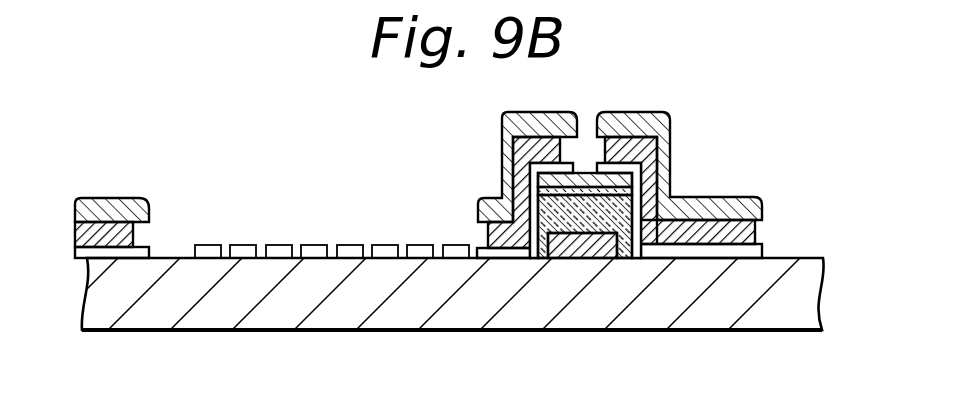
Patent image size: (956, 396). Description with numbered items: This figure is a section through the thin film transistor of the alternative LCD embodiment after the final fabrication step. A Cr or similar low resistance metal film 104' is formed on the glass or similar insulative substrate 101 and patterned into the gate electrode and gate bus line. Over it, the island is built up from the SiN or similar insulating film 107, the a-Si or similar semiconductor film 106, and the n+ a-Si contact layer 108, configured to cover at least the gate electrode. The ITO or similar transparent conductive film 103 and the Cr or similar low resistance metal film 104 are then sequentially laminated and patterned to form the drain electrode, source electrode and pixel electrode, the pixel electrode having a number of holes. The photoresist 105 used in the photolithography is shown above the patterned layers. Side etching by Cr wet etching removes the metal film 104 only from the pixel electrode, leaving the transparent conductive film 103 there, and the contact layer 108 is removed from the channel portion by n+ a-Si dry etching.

The insulative substrate 101 is at (698, 308).
The transparent conductive film 103 is at (762, 249).
The low resistance metal film 104 is at (719, 166).
The low resistance metal film 104' is at (582, 306).
The photoresist 105 is at (503, 123).
The semiconductor film 106 is at (522, 172).
The insulating film 107 is at (622, 215).
The contact layer 108 is at (650, 165).